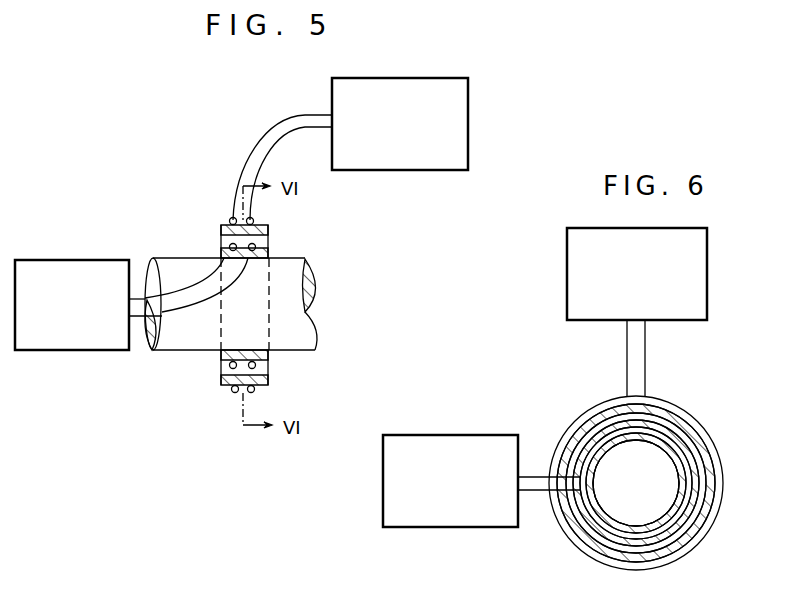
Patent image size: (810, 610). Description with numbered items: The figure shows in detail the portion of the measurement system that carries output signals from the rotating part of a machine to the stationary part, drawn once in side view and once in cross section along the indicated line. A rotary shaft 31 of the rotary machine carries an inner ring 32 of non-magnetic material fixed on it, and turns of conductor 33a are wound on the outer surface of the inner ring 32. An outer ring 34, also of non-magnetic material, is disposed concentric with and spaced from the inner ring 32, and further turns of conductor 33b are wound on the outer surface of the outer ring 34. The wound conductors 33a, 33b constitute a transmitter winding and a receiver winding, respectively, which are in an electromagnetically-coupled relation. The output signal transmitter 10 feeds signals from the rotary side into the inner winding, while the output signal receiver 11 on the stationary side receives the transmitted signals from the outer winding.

In FIG. 5, the output signal transmitter 10 is at (95, 260).
In FIG. 6, the output signal transmitter 10 is at (445, 435).
In FIG. 5, the output signal receiver 11 is at (468, 125).
In FIG. 6, the output signal receiver 11 is at (707, 270).
In FIG. 5, the rotary shaft 31 is at (305, 262).
In FIG. 6, the rotary shaft 31 is at (612, 520).
In FIG. 5, the inner ring 32 is at (221, 257).
In FIG. 6, the inner ring 32 is at (686, 490).
In FIG. 5, the turns of conductor 33a is at (254, 247).
In FIG. 6, the turns of conductor 33a is at (673, 432).
In FIG. 5, the turns of conductor 33b is at (255, 222).
In FIG. 6, the turns of conductor 33b is at (703, 427).
In FIG. 5, the outer ring 34 is at (233, 221).
In FIG. 6, the outer ring 34 is at (703, 515).